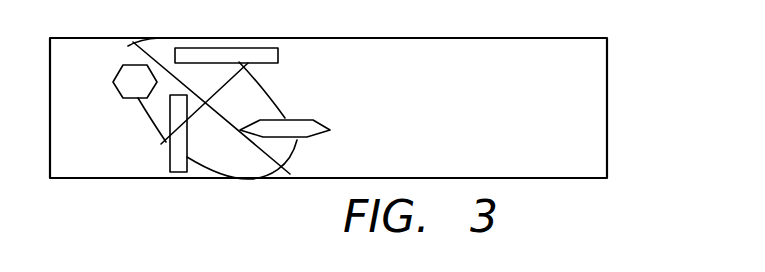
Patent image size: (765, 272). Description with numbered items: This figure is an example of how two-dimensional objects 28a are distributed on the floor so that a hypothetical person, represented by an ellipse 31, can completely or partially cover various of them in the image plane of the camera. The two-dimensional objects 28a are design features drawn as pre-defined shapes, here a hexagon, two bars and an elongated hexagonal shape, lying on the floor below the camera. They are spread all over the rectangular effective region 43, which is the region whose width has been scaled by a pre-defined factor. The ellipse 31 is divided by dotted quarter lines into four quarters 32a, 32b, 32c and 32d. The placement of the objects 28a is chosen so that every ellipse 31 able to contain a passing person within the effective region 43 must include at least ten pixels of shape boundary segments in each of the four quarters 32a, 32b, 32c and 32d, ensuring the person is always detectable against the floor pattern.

The effective region 43 is at (607, 70).
The two-dimensional objects 28a is at (113, 82).
The ellipse 31 is at (272, 90).
The first quarter of ellipse 32a is at (133, 62).
The second quarter of ellipse 32b is at (165, 38).
The third quarter of ellipse 32c is at (221, 162).
The fourth quarter of ellipse 32d is at (290, 173).